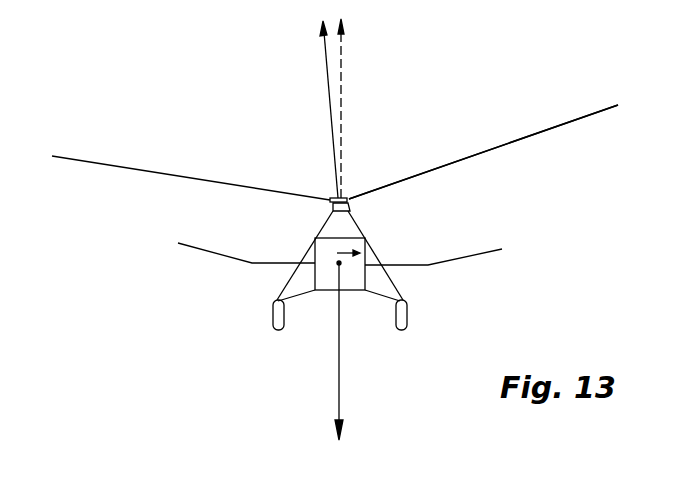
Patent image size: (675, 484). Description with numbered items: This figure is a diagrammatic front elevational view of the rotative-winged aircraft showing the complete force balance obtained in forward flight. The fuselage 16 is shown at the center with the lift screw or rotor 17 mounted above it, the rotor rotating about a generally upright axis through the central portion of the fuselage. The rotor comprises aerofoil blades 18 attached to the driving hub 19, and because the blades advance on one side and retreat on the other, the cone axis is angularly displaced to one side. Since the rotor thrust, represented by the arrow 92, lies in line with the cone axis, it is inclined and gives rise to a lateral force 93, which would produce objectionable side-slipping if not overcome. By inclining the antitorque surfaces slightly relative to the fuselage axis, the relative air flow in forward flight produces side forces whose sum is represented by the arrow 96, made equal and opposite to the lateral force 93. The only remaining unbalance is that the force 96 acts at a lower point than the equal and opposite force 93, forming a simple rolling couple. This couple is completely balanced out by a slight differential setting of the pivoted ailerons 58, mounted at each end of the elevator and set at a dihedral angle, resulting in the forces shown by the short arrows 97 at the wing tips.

The fuselage 16 is at (340, 270).
The lift screw or rotor 17 is at (483, 152).
The aerofoil blades 18 is at (198, 179).
The driving hub 19 is at (350, 205).
The aileron 58 is at (197, 249).
The rotor thrust arrow 92 is at (322, 107).
The lateral force 93 is at (330, 201).
The compensating force arrow 96 is at (350, 350).
The aileron force arrows 97 is at (212, 252).